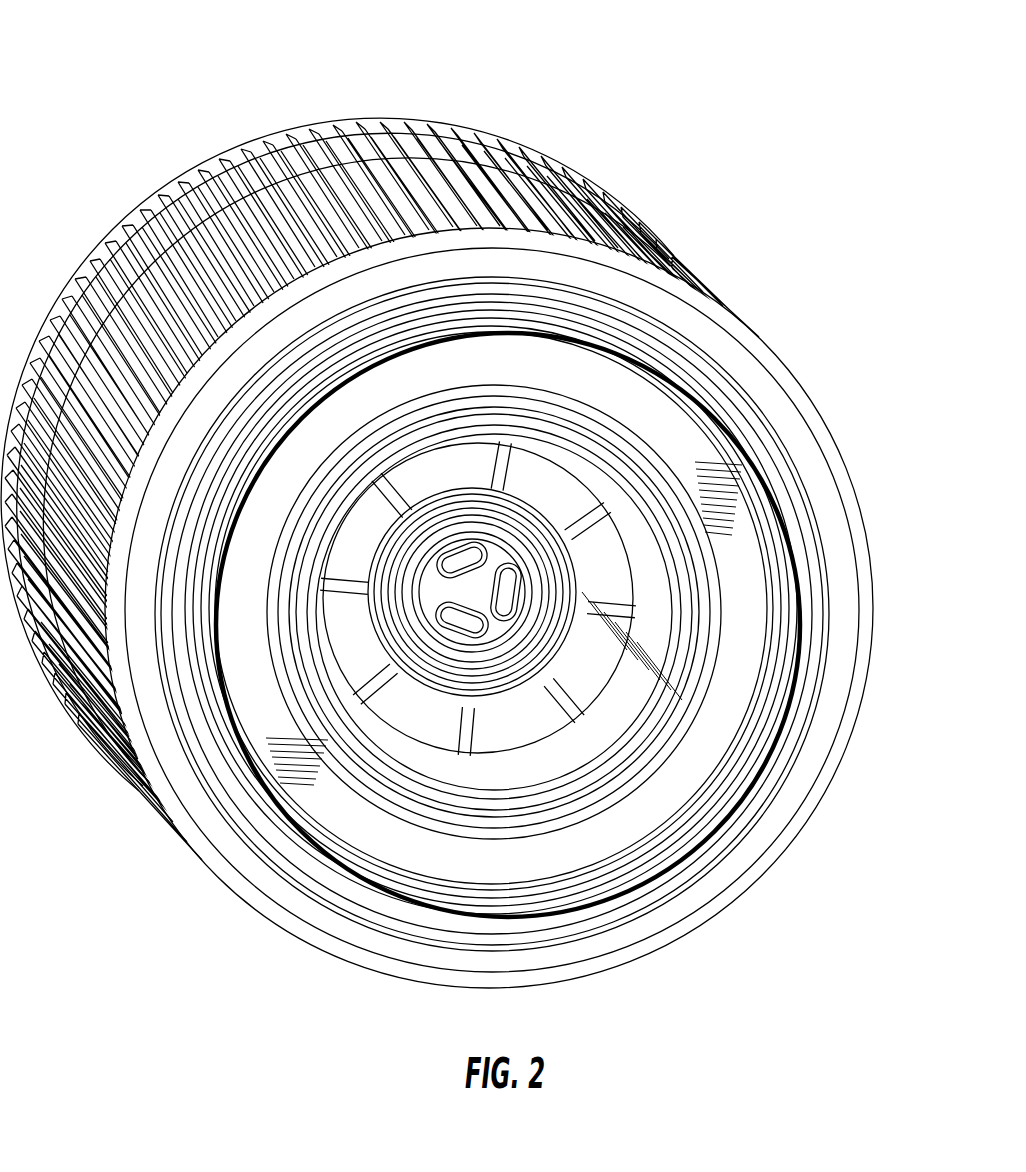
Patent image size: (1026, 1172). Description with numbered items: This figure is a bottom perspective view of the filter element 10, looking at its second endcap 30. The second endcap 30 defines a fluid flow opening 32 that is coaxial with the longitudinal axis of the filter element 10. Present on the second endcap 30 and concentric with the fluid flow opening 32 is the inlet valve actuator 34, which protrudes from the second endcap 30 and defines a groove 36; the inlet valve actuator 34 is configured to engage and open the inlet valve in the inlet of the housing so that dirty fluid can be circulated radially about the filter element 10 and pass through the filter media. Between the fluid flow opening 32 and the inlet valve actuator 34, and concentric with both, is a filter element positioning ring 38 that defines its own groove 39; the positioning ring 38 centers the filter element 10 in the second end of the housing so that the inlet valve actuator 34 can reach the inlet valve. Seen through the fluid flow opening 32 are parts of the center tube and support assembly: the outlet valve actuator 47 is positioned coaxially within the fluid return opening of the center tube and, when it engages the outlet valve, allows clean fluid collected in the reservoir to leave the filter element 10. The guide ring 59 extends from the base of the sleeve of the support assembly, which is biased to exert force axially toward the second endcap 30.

The filter element 10 is at (145, 92).
The second endcap 30 is at (868, 421).
The fluid flow opening 32 is at (583, 680).
The inlet valve actuator 34 is at (720, 843).
The groove 36 is at (610, 900).
The filter element positioning ring 38 is at (330, 743).
The groove 39 is at (297, 617).
The outlet valve actuator 47 is at (477, 593).
The guide ring 59 is at (503, 520).